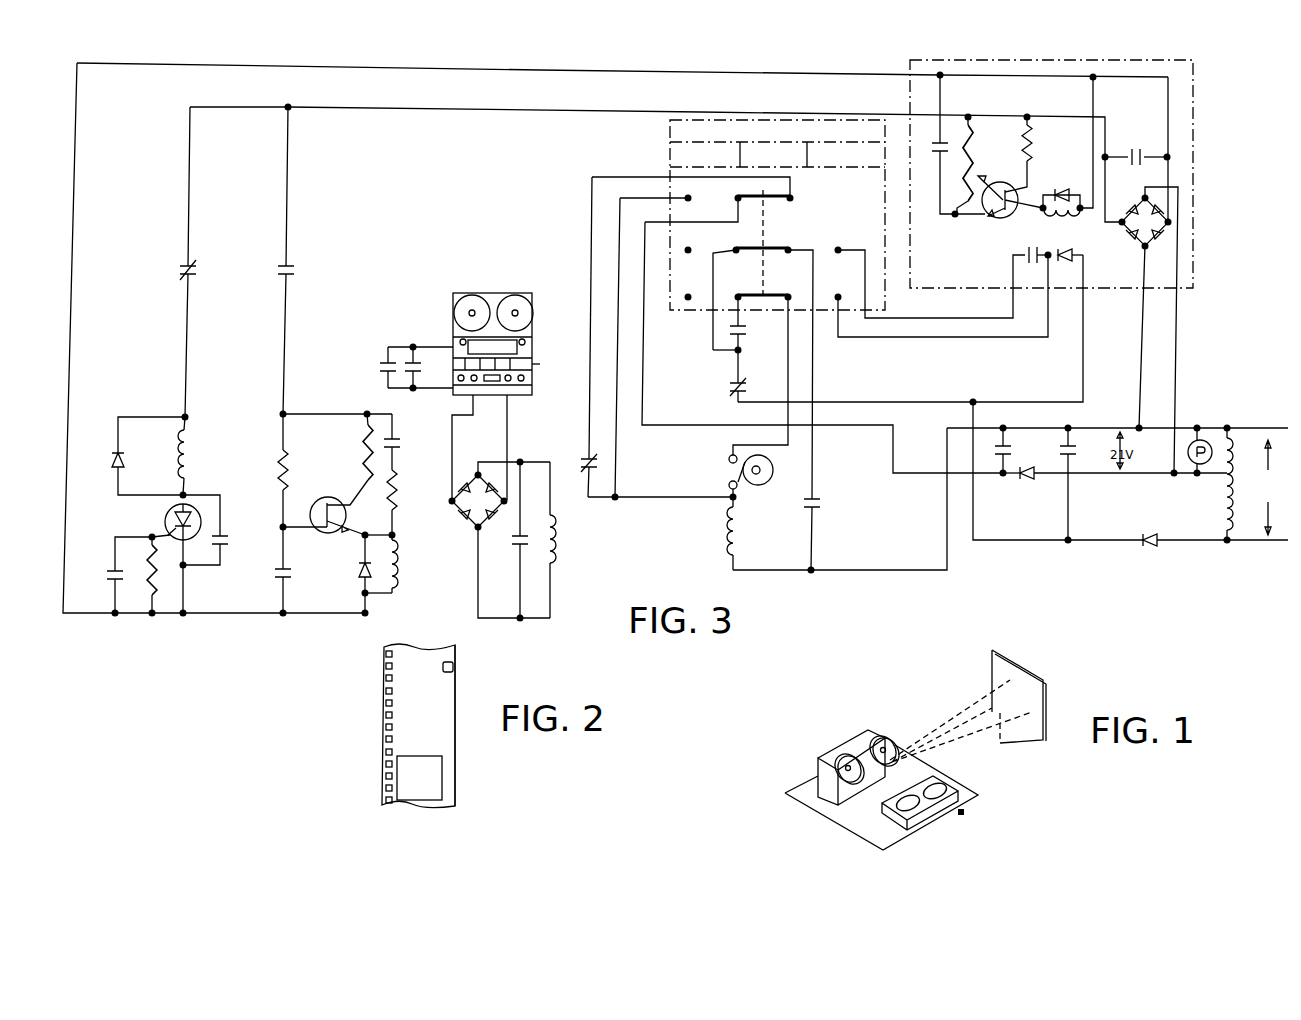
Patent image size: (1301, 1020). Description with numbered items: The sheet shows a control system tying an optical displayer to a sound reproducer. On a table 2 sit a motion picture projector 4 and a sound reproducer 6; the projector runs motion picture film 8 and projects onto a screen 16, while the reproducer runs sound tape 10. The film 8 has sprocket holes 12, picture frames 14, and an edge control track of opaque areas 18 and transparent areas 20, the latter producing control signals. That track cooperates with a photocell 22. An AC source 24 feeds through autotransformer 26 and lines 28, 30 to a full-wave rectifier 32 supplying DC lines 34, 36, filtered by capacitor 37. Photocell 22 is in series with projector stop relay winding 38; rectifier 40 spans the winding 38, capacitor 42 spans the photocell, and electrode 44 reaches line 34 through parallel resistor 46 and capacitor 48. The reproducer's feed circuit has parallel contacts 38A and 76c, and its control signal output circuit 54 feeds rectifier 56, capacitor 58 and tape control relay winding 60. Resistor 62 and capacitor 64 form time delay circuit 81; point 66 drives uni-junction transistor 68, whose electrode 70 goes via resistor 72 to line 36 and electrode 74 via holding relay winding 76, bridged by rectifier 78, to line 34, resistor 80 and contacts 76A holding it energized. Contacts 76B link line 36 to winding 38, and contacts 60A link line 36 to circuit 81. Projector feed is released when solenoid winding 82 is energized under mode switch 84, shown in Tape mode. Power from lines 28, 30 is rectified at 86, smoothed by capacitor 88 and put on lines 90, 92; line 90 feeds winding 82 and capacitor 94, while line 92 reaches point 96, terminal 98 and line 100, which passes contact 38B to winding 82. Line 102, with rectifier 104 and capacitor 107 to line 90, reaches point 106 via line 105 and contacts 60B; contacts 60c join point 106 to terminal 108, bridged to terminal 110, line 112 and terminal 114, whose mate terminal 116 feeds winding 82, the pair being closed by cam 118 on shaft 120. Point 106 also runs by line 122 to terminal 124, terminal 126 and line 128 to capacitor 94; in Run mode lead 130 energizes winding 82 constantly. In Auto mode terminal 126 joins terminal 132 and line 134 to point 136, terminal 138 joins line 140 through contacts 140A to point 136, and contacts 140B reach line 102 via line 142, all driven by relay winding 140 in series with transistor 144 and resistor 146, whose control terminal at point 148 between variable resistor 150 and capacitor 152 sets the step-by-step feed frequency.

In FIG. 1, the table 2 is at (830, 826).
In FIG. 1, the motion picture projector 4 is at (838, 737).
In FIG. 3, the sound reproducer 6 is at (538, 364).
In FIG. 1, the sound reproducer 6 is at (948, 808).
In FIG. 2, the motion picture film 8 is at (460, 716).
In FIG. 3, the sound tape 10 is at (538, 329).
In FIG. 1, the sound tape 10 is at (920, 818).
In FIG. 2, the sprocket holes 12 is at (385, 713).
In FIG. 2, the frames 14 is at (430, 780).
In FIG. 1, the screen 16 is at (1040, 692).
In FIG. 2, the opaque area 18 is at (458, 688).
In FIG. 2, the transparent areas 20 is at (458, 664).
In FIG. 3, the photocell 22 is at (165, 520).
In FIG. 3, the AC source 24 is at (1268, 487).
In FIG. 3, the autotransformer 26 is at (1220, 502).
In FIG. 3, the line 28 is at (1176, 370).
In FIG. 3, the line 30 is at (1138, 374).
In FIG. 3, the full-wave rectifier 32 is at (1174, 231).
In FIG. 3, the line 34 is at (214, 614).
In FIG. 3, the line 36 is at (266, 107).
In FIG. 3, the capacitor 37 is at (1144, 160).
In FIG. 3, the projector stop relay winding 38 is at (192, 456).
In FIG. 3, the relay contacts 38A is at (380, 362).
In FIG. 3, the relay contact 38B is at (584, 456).
In FIG. 3, the rectifier 40 is at (114, 454).
In FIG. 3, the capacitor 42 is at (228, 540).
In FIG. 3, the electrode 44 is at (162, 547).
In FIG. 3, the resistor 46 is at (156, 580).
In FIG. 3, the capacitor 48 is at (108, 570).
In FIG. 3, the control signal output circuit 54 is at (476, 420).
In FIG. 3, the full-wave rectifier 56 is at (476, 472).
In FIG. 3, the capacitor 58 is at (514, 548).
In FIG. 3, the tape control relay winding 60 is at (562, 542).
In FIG. 3, the relay contacts 60A is at (296, 274).
In FIG. 3, the relay contacts 60B is at (730, 384).
In FIG. 3, the relay contacts 60c is at (748, 333).
In FIG. 3, the resistor 62 is at (290, 478).
In FIG. 3, the capacitor 64 is at (292, 578).
In FIG. 3, the point 66 is at (276, 524).
In FIG. 3, the uni-junction transistor 68 is at (316, 504).
In FIG. 3, the output electrode 70 is at (356, 500).
In FIG. 3, the resistor 72 is at (362, 444).
In FIG. 3, the output electrode 74 is at (350, 540).
In FIG. 3, the holding relay winding 76 is at (400, 560).
In FIG. 3, the relay contacts 76A is at (400, 446).
In FIG. 3, the contacts 76B is at (197, 276).
In FIG. 3, the contacts 76c is at (424, 384).
In FIG. 3, the rectifier 78 is at (358, 574).
In FIG. 3, the resistor 80 is at (397, 493).
In FIG. 3, the time delay circuit 81 is at (333, 408).
In FIG. 3, the solenoid winding 82 is at (722, 538).
In FIG. 3, the operation mode control switch 84 is at (778, 116).
In FIG. 3, the rectifier 86 is at (1030, 482).
In FIG. 3, the capacitor 88 is at (1012, 454).
In FIG. 3, the line 90 is at (918, 572).
In FIG. 3, the line 92 is at (916, 476).
In FIG. 3, the capacitor 94 is at (820, 508).
In FIG. 3, the point 96 is at (742, 206).
In FIG. 3, the terminal 98 is at (792, 204).
In FIG. 3, the line 100 is at (590, 196).
In FIG. 3, the line 102 is at (1106, 544).
In FIG. 3, the rectifier 104 is at (1154, 552).
In FIG. 3, the line 105 is at (868, 402).
In FIG. 3, the point 106 is at (740, 352).
In FIG. 3, the capacitor 107 is at (1078, 454).
In FIG. 3, the switch terminal 108 is at (740, 298).
In FIG. 3, the switch terminal 110 is at (789, 298).
In FIG. 3, the line 112 is at (746, 388).
In FIG. 3, the switch terminal 114 is at (728, 458).
In FIG. 3, the terminal 116 is at (729, 485).
In FIG. 3, the cam 118 is at (774, 464).
In FIG. 3, the shaft 120 is at (762, 482).
In FIG. 3, the line 122 is at (712, 348).
In FIG. 3, the switch terminal 124 is at (738, 258).
In FIG. 3, the switch terminal 126 is at (790, 258).
In FIG. 3, the line 128 is at (691, 196).
In FIG. 3, the lead 130 is at (618, 440).
In FIG. 3, the terminal 132 is at (840, 246).
In FIG. 3, the line 134 is at (1040, 330).
In FIG. 3, the point 136 is at (1058, 214).
In FIG. 3, the switch terminal 138 is at (846, 290).
In FIG. 3, the relay winding 140 is at (976, 334).
In FIG. 3, the relay contacts 140A is at (1030, 252).
In FIG. 3, the contacts 140B is at (1074, 256).
In FIG. 3, the line 142 is at (1084, 336).
In FIG. 3, the transistor 144 is at (998, 182).
In FIG. 3, the resistor 146 is at (1030, 148).
In FIG. 3, the point 148 is at (956, 218).
In FIG. 3, the variable resistor 150 is at (978, 158).
In FIG. 3, the capacitor 152 is at (934, 150).